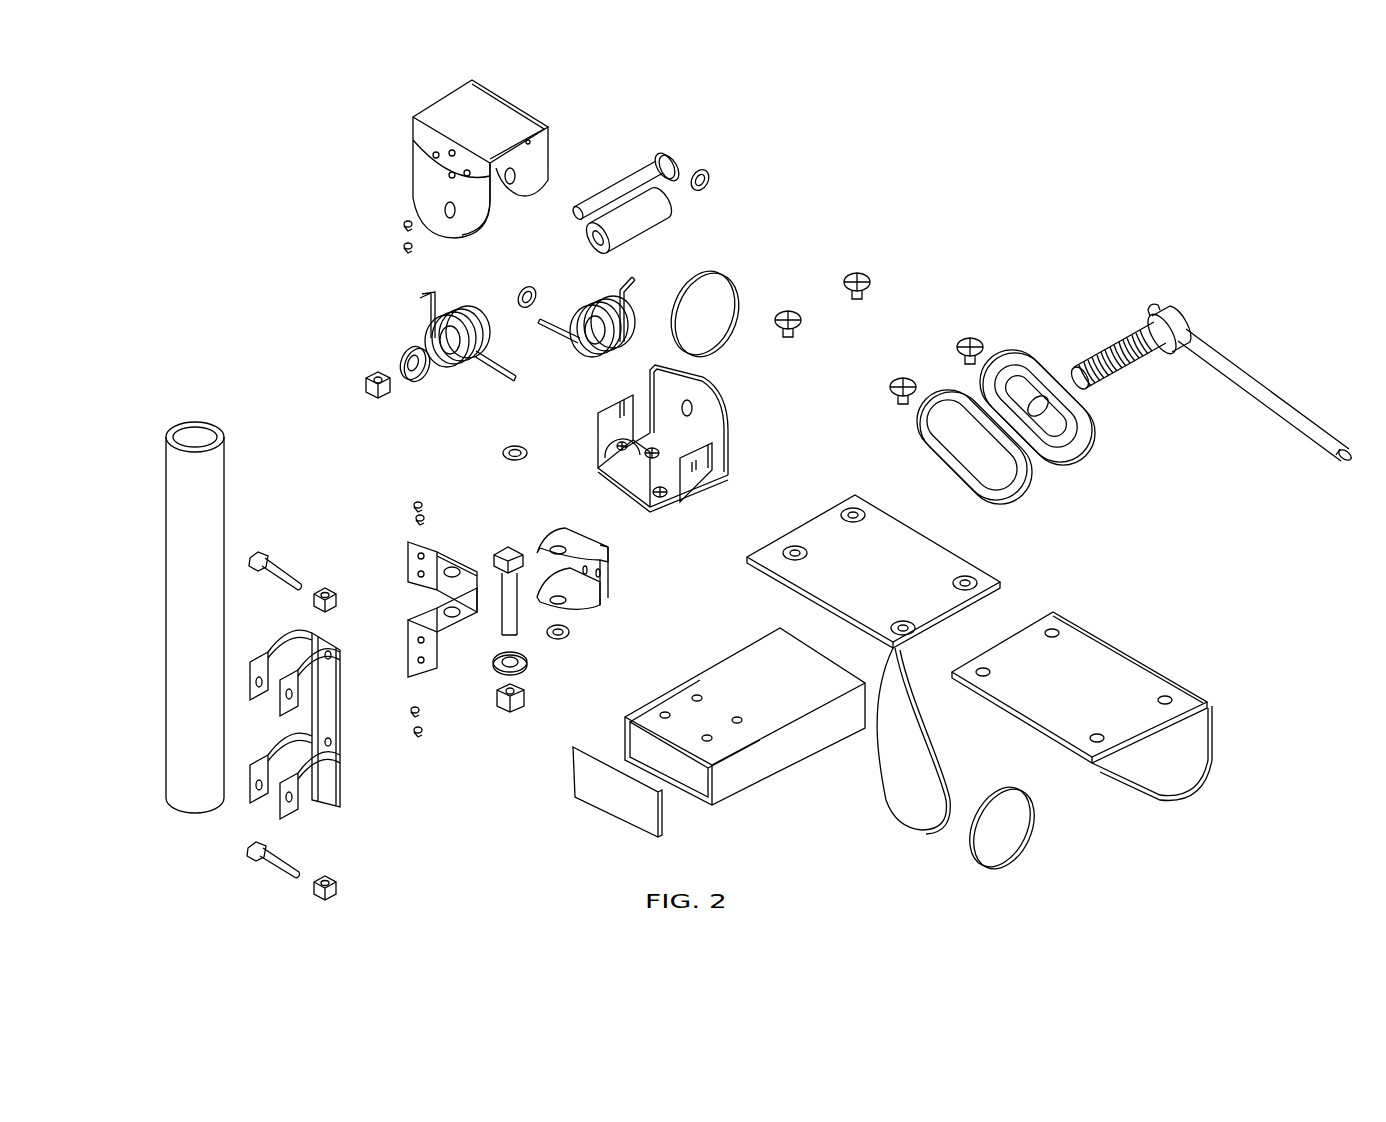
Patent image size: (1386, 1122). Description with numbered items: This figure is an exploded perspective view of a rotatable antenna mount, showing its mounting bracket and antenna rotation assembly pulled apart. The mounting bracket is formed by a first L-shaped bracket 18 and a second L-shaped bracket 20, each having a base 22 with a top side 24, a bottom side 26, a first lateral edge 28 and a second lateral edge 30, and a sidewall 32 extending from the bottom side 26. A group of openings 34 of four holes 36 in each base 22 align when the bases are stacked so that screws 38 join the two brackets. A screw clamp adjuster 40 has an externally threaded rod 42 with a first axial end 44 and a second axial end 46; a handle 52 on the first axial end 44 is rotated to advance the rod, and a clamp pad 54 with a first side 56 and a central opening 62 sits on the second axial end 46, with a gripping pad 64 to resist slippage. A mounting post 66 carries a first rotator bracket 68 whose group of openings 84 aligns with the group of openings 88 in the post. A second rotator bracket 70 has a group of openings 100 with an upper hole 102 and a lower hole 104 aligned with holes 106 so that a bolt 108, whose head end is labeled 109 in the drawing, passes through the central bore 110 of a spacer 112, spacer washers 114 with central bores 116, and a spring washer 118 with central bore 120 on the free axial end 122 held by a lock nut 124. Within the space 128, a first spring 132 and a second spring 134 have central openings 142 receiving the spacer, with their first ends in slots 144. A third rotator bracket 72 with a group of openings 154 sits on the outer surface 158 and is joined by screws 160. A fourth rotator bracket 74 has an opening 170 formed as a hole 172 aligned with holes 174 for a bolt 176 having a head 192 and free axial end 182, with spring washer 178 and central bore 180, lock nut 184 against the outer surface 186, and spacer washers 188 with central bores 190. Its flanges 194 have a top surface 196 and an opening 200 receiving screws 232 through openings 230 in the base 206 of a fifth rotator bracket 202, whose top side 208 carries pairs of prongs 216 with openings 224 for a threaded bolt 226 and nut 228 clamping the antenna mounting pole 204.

The first L-shaped bracket 18 is at (935, 820).
The second L-shaped bracket 20 is at (1187, 777).
The base 22 is at (790, 525).
The top side 24 is at (830, 510).
The bottom side 26 is at (905, 650).
The first lateral edge 28 is at (708, 665).
The second lateral edge 30 is at (950, 545).
The sidewall 32 is at (835, 740).
The group of openings 34 is at (805, 555).
The holes 36 is at (858, 505).
The screws 38 is at (970, 338).
The screw clamp adjuster 40 is at (1172, 272).
The externally threaded rod 42 is at (1118, 352).
The first axial end 44 is at (1188, 308).
The second axial end 46 is at (1085, 365).
The handle 52 is at (1275, 395).
The clamp pad 54 is at (1020, 380).
The first side 56 is at (1085, 430).
The opening 62 is at (1040, 400).
The gripping pad 64 is at (725, 282).
The mounting post 66 is at (722, 790).
The first rotator bracket 68 is at (650, 508).
The second rotator bracket 70 is at (411, 196).
The third rotator bracket 72 is at (598, 605).
The fourth rotator bracket 74 is at (440, 690).
The group of openings 84 is at (668, 492).
The group of openings 88 is at (742, 720).
The group of openings 100 is at (425, 178).
The upper hole 102 is at (413, 137).
The lower hole 104 is at (548, 135).
The holes 106 is at (693, 408).
The bolt 108 is at (628, 165).
The pin head 109 is at (672, 155).
The central bore 110 is at (598, 240).
The spacer 112 is at (668, 205).
The spacer washer 114 is at (706, 172).
The central bore 116 is at (708, 185).
The spring washer 118 is at (408, 350).
The central bore 120 is at (418, 378).
The free axial end 122 is at (580, 205).
The lock nut 124 is at (366, 380).
The space 128 is at (675, 455).
The first spring 132 is at (420, 295).
The second spring 134 is at (565, 340).
The central opening 142 is at (555, 330).
The slots 144 is at (622, 398).
The group of openings 154 is at (600, 570).
The outer surface 158 is at (478, 205).
The screws 160 is at (400, 246).
The opening 170 is at (455, 618).
The hole 172 is at (455, 565).
The holes 174 is at (560, 545).
The bolt 176 is at (527, 655).
The spring washer 178 is at (525, 670).
The central bore 180 is at (495, 670).
The free axial end 182 is at (496, 640).
The lock nut 184 is at (510, 712).
The outer surface 186 is at (590, 545).
The spacer washer 188 is at (503, 453).
The central bore 190 is at (528, 450).
The head 192 is at (510, 547).
The flange 194 is at (410, 550).
The top surface 196 is at (396, 718).
The opening 200 is at (408, 582).
The fifth rotator bracket 202 is at (330, 740).
The antenna mounting pole 204 is at (226, 448).
The base 206 is at (320, 720).
The top side 208 is at (345, 690).
The pairs of prongs 216 is at (320, 805).
The openings 224 is at (259, 675).
The threaded bolt 226 is at (270, 552).
The nut 228 is at (325, 588).
The openings 230 is at (328, 742).
The screws 232 is at (418, 715).